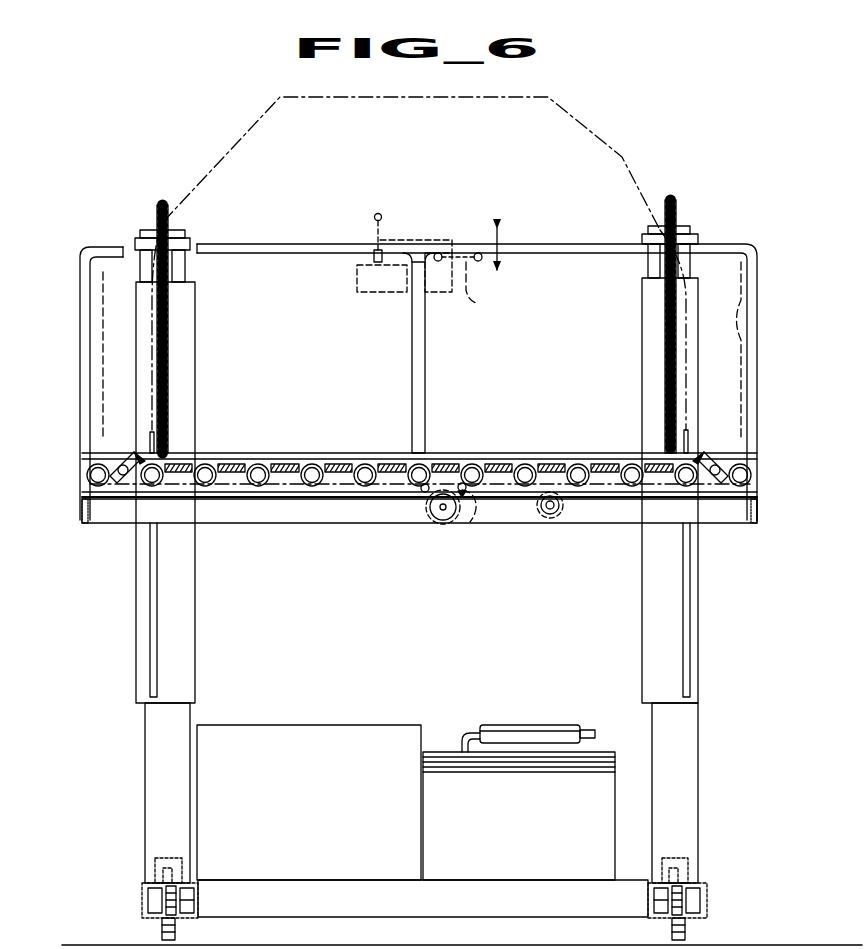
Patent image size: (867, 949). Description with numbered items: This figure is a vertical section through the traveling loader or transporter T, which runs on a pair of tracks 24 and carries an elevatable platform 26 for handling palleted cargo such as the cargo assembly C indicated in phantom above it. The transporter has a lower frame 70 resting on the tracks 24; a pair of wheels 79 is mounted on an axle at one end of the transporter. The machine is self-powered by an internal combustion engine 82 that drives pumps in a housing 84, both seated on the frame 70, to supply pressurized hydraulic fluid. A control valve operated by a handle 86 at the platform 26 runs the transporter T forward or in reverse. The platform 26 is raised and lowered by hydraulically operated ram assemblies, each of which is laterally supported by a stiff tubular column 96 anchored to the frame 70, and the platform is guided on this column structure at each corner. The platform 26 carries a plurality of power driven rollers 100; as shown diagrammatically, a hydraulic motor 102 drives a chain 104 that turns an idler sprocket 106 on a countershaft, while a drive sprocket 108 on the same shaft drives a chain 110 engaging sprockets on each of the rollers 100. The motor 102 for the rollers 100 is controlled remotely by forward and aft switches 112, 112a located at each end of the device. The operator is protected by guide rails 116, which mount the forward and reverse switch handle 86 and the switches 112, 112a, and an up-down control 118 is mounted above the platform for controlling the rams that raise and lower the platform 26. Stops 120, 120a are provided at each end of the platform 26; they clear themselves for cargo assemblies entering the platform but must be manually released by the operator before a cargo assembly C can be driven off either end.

The tracks 24 is at (165, 943).
The elevatable platform 26 is at (112, 455).
The lower frame 70 is at (466, 910).
The wheels 79 is at (178, 929).
The internal combustion engine 82 is at (531, 840).
The housing 84 is at (321, 817).
The handle 86 is at (372, 216).
The tubular column 96 is at (155, 774).
The power driven rollers 100 is at (312, 462).
The hydraulic motor 102 is at (563, 511).
The chain 104 is at (465, 523).
The idler sprocket 106 is at (462, 500).
The drive sprocket 108 is at (428, 513).
The chain 110 is at (350, 485).
The forward switch 112 is at (110, 383).
The aft switch 112a is at (733, 287).
The guide rails 116 is at (297, 254).
The up-down control 118 is at (478, 331).
The stop 120 is at (127, 460).
The stop 120a is at (706, 460).
The cargo assembly C is at (580, 113).
The transporter T is at (712, 210).